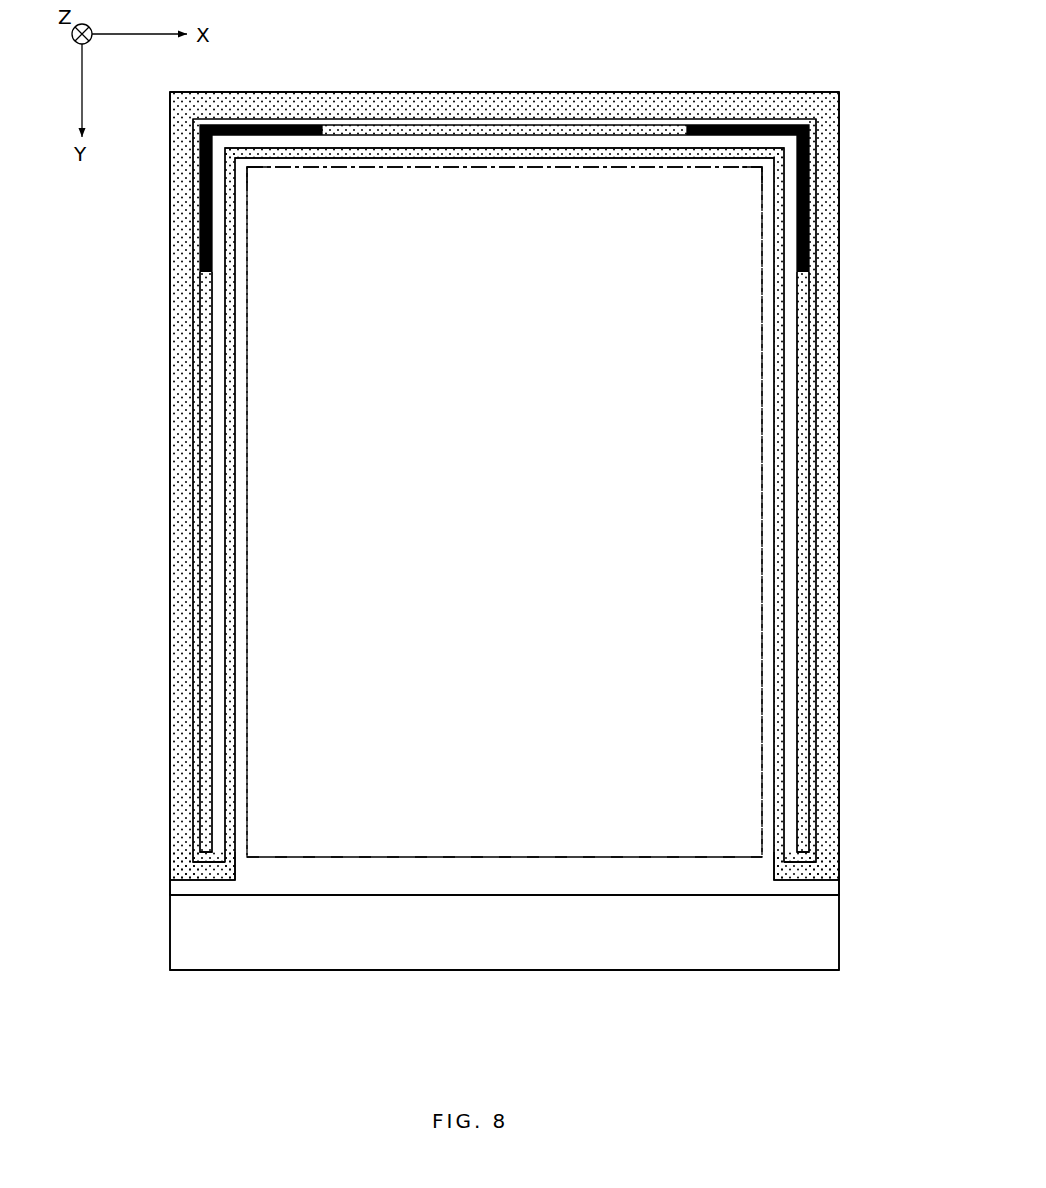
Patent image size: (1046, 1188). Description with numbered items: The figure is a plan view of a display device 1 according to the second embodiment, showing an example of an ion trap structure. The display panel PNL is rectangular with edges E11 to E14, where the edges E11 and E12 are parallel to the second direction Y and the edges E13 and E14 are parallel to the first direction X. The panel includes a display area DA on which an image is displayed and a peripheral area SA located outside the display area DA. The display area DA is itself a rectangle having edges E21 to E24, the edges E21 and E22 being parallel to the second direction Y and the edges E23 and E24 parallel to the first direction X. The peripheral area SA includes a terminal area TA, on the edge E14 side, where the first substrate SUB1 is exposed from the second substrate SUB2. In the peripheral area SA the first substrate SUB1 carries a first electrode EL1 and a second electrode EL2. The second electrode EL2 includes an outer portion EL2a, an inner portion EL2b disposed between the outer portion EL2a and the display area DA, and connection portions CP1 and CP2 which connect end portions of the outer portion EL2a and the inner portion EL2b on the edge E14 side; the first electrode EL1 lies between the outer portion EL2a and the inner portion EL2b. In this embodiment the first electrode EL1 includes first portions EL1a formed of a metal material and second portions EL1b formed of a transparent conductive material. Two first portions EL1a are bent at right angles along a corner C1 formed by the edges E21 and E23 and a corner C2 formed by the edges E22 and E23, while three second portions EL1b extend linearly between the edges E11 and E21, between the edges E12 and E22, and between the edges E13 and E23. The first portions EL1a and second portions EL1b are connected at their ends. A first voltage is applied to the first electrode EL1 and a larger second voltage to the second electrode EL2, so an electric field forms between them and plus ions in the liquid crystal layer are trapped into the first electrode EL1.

The display device 1 is at (808, 66).
The display panel PNL is at (76, 898).
The first substrate SUB1 is at (168, 952).
The second substrate SUB2 is at (187, 897).
The terminal area TA is at (250, 956).
The peripheral area SA is at (710, 106).
The display area DA is at (637, 188).
The edge E11 is at (164, 496).
The edge E12 is at (845, 490).
The edge E13 is at (474, 89).
The edge E14 is at (485, 975).
The edge E21 is at (255, 496).
The edge E22 is at (754, 496).
The edge E23 is at (478, 174).
The edge E24 is at (480, 851).
The first electrode EL1 is at (484, 488).
The first portion EL1a is at (206, 222).
The second portion EL1b is at (563, 137).
The second electrode EL2 is at (423, 499).
The outer portion EL2a is at (186, 707).
The inner portion EL2b is at (226, 748).
The corner C1 is at (262, 182).
The corner C2 is at (748, 183).
The connection portion CP1 is at (213, 881).
The connection portion CP2 is at (801, 881).